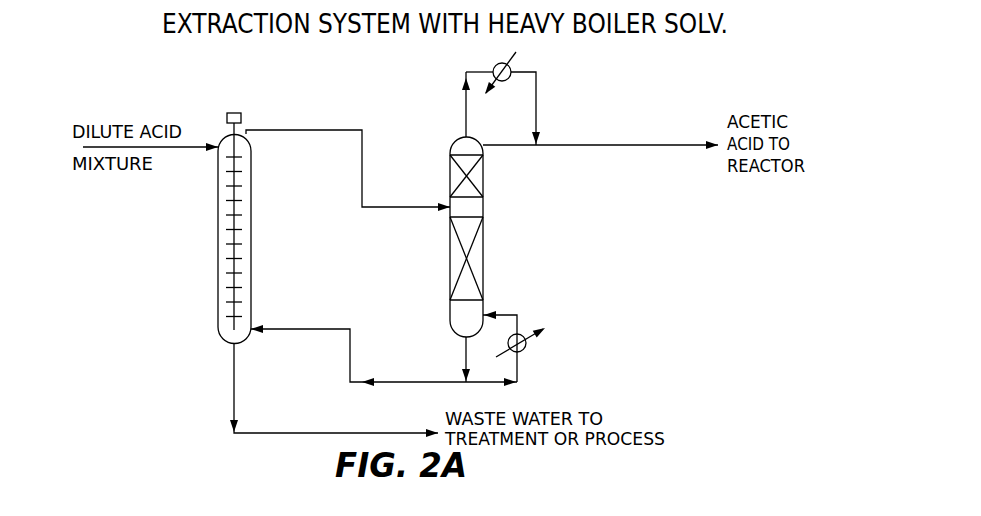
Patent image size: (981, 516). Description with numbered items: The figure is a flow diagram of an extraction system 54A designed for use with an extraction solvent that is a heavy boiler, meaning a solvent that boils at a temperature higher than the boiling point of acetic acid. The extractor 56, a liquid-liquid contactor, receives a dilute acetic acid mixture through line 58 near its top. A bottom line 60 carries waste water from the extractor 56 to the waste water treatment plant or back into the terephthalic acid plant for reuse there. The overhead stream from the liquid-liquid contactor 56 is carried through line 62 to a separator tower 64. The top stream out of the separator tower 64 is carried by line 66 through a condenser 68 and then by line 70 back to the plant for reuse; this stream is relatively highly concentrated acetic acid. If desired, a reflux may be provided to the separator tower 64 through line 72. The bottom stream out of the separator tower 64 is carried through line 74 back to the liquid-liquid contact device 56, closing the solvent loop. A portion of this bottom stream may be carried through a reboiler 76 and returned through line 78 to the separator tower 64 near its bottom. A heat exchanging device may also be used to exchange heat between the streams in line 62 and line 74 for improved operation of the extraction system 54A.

The extraction system 54A is at (177, 215).
The extractor 56 is at (218, 210).
The line 58 is at (196, 144).
The bottom line 60 is at (234, 387).
The line 62 is at (296, 130).
The separator tower 64 is at (483, 265).
The line 66 is at (466, 114).
The condenser 68 is at (495, 65).
The line 70 is at (536, 112).
The line 72 is at (522, 146).
The line 74 is at (466, 352).
The reboiler 76 is at (527, 345).
The line 78 is at (517, 315).